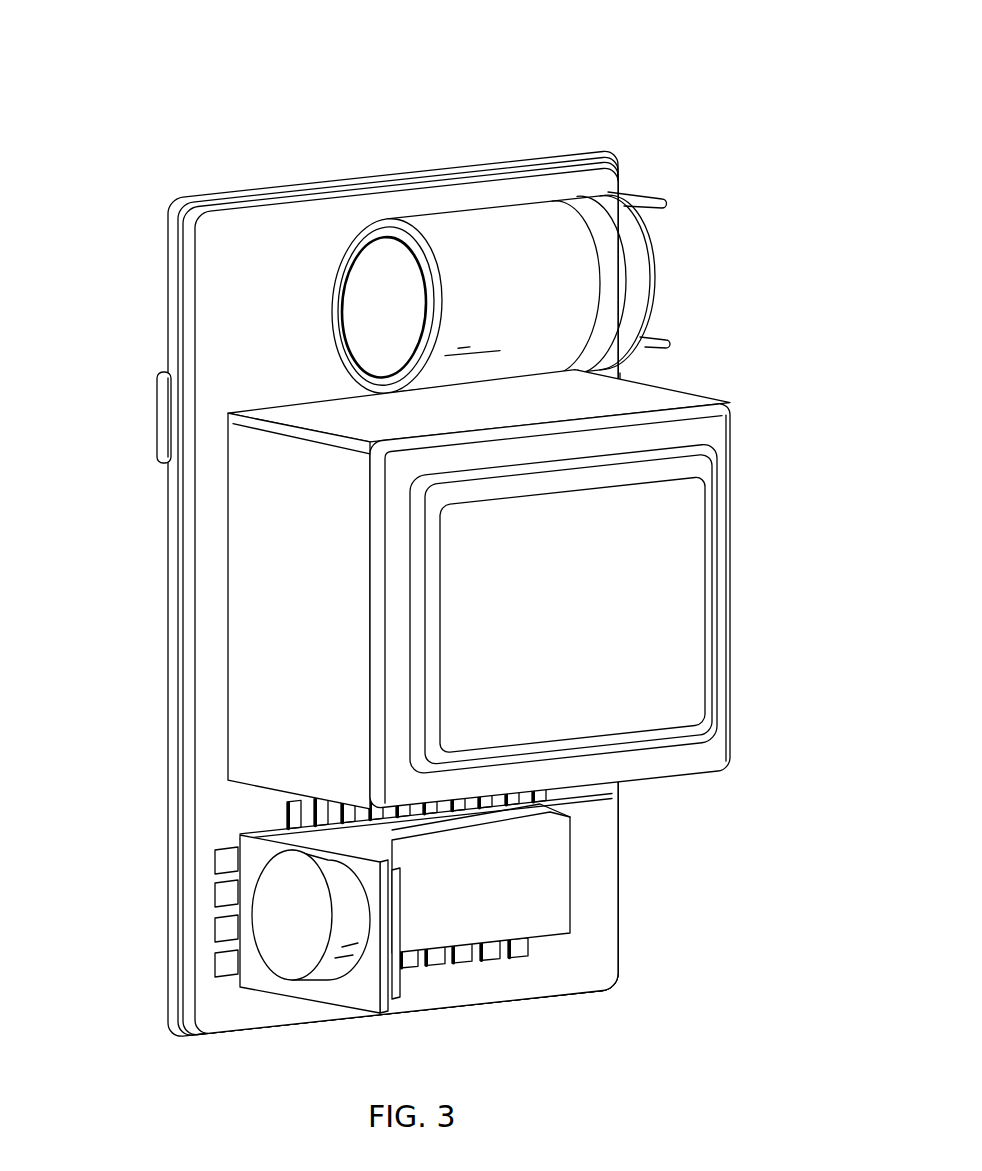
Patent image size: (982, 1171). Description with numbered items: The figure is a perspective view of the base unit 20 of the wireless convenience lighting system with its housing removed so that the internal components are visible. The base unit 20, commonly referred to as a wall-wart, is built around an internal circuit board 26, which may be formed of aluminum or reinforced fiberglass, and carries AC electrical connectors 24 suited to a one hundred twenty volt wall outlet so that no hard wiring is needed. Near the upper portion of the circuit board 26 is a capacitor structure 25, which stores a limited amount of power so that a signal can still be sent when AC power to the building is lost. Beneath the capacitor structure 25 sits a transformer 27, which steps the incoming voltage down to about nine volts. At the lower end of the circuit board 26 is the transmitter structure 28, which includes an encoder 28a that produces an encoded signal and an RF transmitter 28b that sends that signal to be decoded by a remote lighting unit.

The base unit 20 is at (748, 133).
The AC electrical connectors 24 is at (162, 404).
The capacitor structure 25 is at (495, 240).
The circuit board 26 is at (212, 623).
The transformer 27 is at (603, 621).
The transmitter structure 28 is at (522, 982).
The encoder 28a is at (553, 886).
The RF transmitter 28b is at (337, 992).